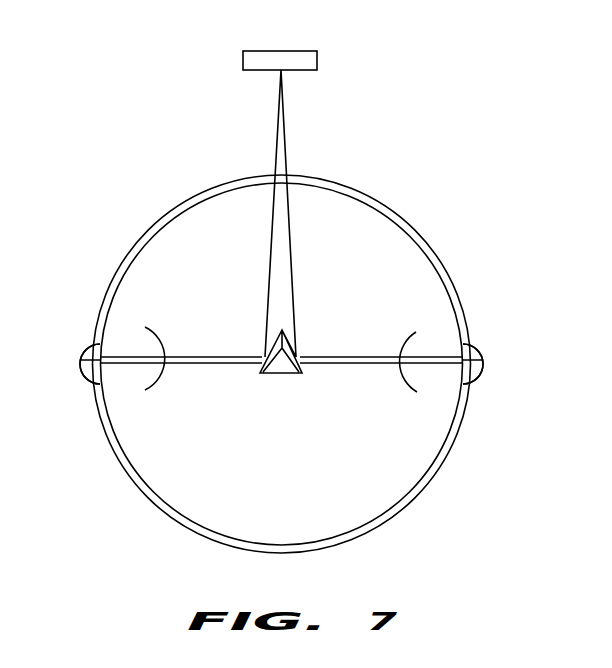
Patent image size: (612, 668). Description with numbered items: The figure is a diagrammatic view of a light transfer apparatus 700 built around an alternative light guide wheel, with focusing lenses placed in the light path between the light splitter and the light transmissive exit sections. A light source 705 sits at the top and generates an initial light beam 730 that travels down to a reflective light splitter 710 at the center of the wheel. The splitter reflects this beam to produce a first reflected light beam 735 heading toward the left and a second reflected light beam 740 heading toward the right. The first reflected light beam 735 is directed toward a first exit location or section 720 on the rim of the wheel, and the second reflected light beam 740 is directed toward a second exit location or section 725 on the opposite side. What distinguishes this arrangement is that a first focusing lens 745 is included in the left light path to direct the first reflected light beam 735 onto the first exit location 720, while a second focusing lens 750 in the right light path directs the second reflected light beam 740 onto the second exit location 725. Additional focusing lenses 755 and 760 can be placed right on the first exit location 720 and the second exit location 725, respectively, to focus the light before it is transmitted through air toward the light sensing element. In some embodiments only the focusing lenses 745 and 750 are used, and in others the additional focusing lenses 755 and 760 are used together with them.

The light transfer apparatus 700 is at (551, 63).
The light source 705 is at (280, 50).
The reflective light splitter 710 is at (282, 371).
The first exit location or section 720 is at (81, 368).
The second exit location or section 725 is at (476, 348).
The initial light beam 730 is at (285, 133).
The first reflected light beam 735 is at (212, 363).
The second reflected light beam 740 is at (347, 363).
The first focusing lens 745 is at (150, 333).
The second focusing lens 750 is at (410, 334).
The additional focusing lens 755 is at (82, 354).
The additional focusing lens 760 is at (483, 362).